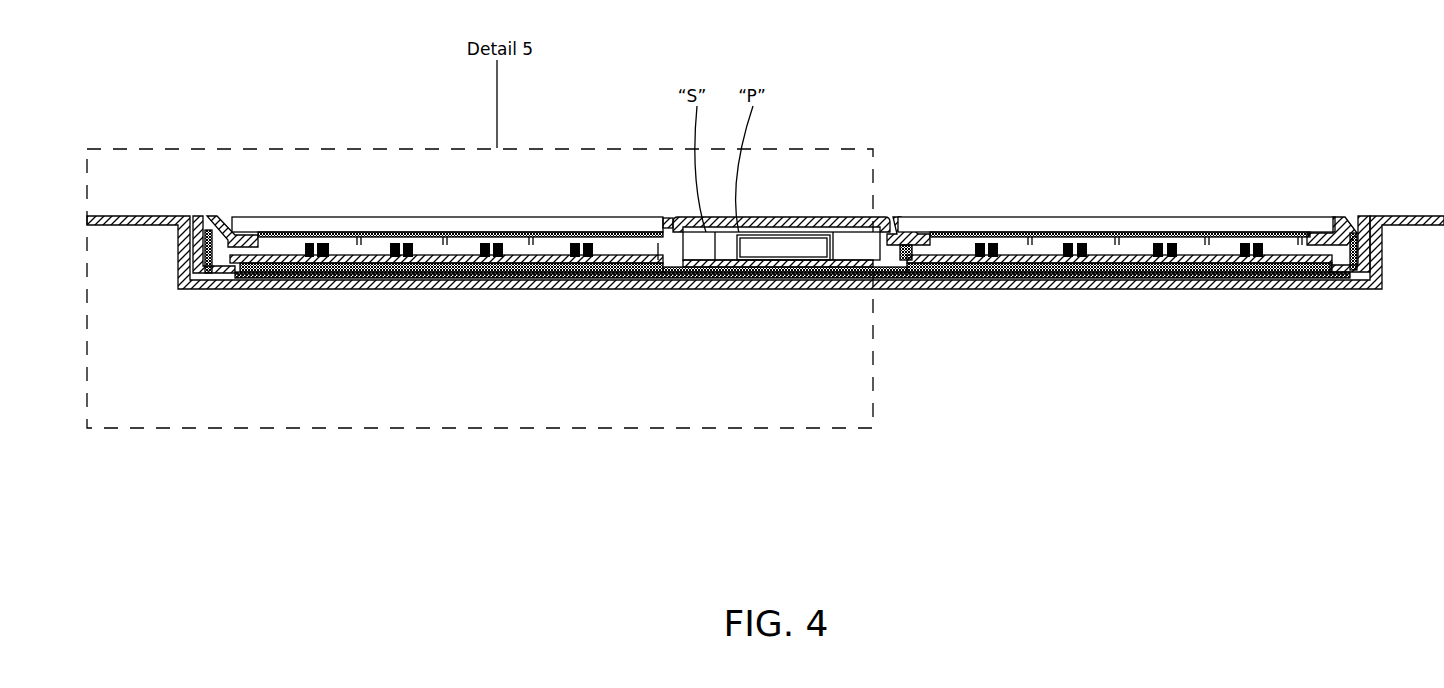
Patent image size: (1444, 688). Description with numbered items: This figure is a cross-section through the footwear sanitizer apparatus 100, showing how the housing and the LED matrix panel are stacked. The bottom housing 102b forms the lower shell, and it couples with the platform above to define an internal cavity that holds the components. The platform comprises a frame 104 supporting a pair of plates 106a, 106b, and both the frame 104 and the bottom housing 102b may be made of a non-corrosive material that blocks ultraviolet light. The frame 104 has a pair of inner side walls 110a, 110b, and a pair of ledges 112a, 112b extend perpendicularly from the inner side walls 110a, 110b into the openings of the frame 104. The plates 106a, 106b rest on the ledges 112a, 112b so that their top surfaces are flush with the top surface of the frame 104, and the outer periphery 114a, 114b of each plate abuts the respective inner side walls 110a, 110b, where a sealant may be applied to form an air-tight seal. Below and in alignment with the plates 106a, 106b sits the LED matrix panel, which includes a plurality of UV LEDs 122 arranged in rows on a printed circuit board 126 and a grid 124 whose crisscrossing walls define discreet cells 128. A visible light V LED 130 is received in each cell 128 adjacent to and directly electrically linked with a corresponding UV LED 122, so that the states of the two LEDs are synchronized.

The apparatus 100 is at (1081, 76).
The bottom housing 102b is at (207, 290).
The frame 104 is at (795, 222).
The plate 106a is at (552, 228).
The plate 106b is at (1183, 226).
The inner side wall 110a is at (207, 222).
The inner side wall 110b is at (905, 238).
The ledge 112a is at (250, 238).
The ledge 112b is at (925, 242).
The outer periphery 114a is at (685, 280).
The outer periphery 114b is at (1332, 245).
The UV LED 122 is at (312, 242).
The grid 124 is at (292, 262).
The printed circuit board 126 is at (355, 268).
The cell 128 is at (265, 258).
The V LED 130 is at (322, 258).